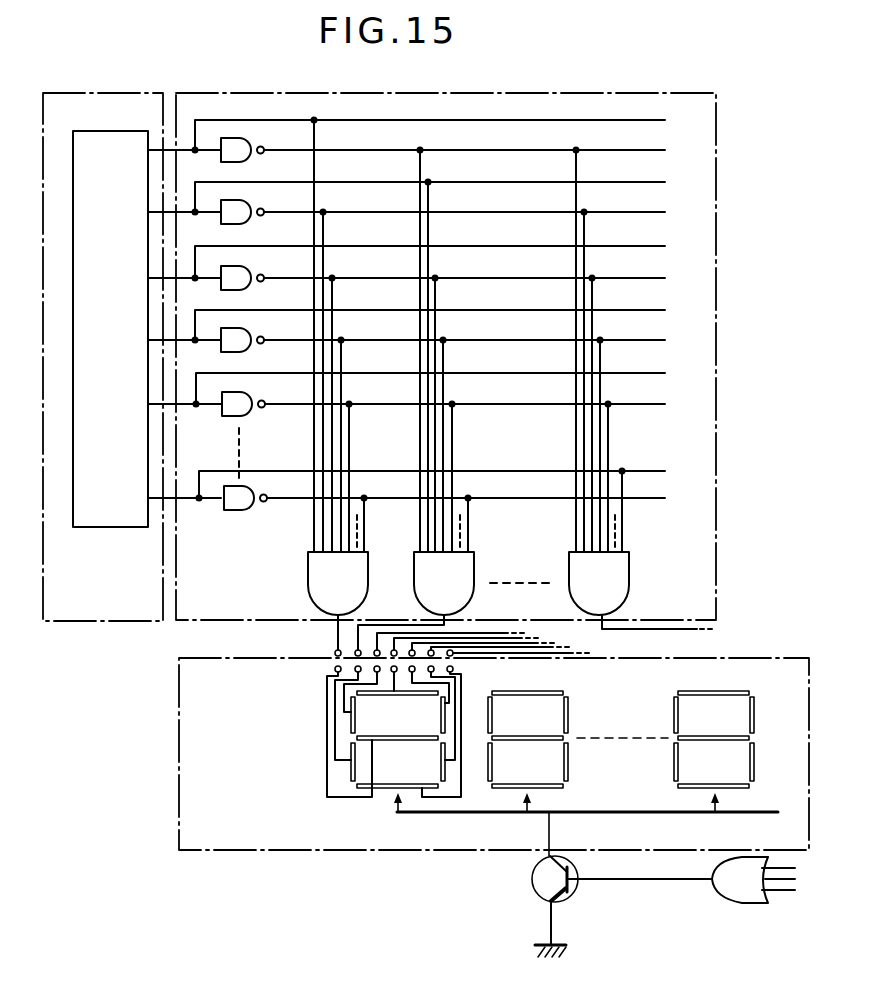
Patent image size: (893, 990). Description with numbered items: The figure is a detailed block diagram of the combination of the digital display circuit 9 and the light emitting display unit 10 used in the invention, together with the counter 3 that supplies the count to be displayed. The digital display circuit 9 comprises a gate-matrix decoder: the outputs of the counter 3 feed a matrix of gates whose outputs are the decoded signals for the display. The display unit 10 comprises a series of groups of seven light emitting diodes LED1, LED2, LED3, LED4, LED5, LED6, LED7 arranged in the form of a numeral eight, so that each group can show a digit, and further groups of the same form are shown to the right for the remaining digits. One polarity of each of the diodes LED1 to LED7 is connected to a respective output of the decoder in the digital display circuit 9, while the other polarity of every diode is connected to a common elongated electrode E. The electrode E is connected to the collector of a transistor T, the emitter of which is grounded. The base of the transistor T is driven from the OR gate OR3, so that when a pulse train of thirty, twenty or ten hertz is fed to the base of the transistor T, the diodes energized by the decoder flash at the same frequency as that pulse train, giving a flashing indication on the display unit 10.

The counter 3 is at (125, 93).
The digital display circuit 9 is at (526, 93).
The display unit 10 is at (494, 775).
The light emitting diode LED1 is at (365, 695).
The light emitting diode LED2 is at (384, 740).
The light emitting diode LED3 is at (387, 790).
The light emitting diode LED4 is at (446, 702).
The light emitting diode LED5 is at (443, 775).
The light emitting diode LED6 is at (351, 712).
The light emitting diode LED7 is at (351, 775).
The elongated electrode E is at (584, 818).
The transistor T is at (536, 890).
The OR gate OR3 is at (733, 893).